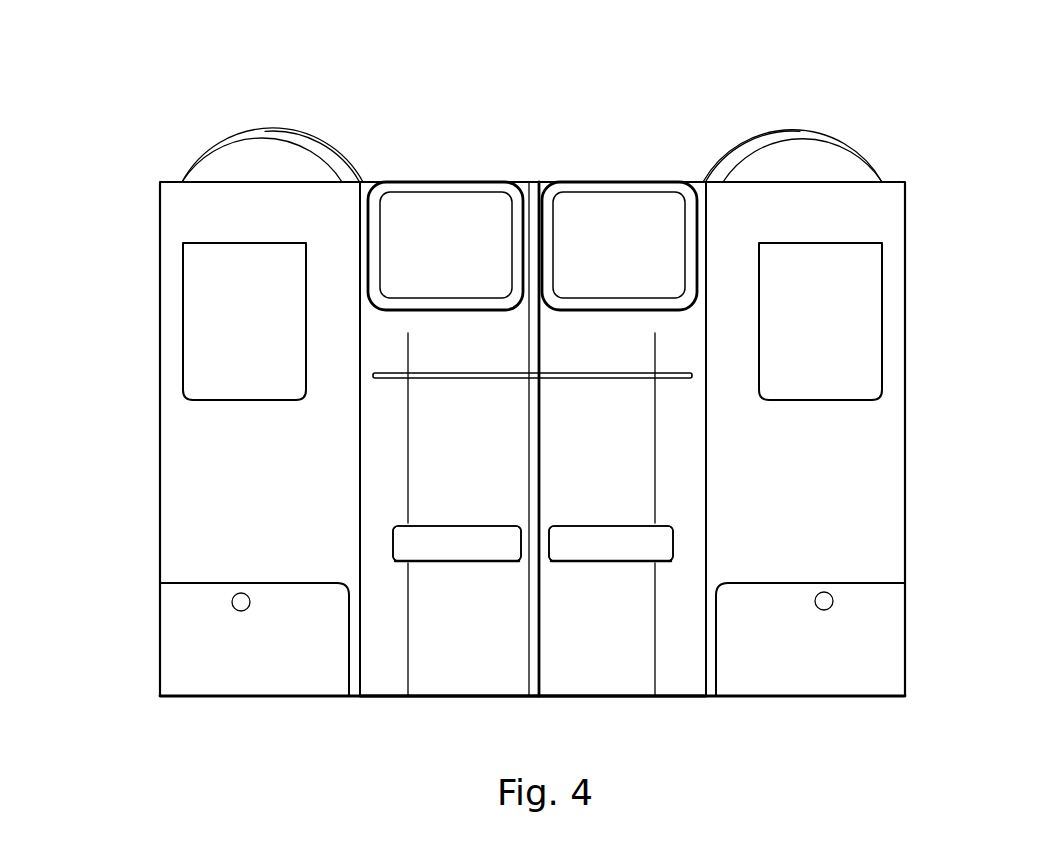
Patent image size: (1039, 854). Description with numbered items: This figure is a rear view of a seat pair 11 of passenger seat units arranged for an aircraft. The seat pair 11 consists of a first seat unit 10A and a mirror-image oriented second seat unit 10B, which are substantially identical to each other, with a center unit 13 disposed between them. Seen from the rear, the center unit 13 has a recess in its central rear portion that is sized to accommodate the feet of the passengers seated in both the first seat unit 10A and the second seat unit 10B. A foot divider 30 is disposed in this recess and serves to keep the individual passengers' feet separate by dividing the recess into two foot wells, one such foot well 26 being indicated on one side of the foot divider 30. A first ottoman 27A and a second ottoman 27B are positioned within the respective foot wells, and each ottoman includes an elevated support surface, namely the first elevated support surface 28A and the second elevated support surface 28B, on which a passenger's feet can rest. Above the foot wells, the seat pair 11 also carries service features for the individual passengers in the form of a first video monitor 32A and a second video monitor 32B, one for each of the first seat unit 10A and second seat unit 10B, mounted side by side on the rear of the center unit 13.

The first seat unit 10A is at (250, 90).
The second seat unit 10B is at (855, 103).
The seat pair 11 is at (560, 107).
The center unit 13 is at (597, 182).
The foot well 26 is at (489, 655).
The first ottoman 27A is at (410, 547).
The second ottoman 27B is at (648, 543).
The first elevated support surface 28A is at (458, 525).
The second elevated support surface 28B is at (593, 525).
The foot divider 30 is at (540, 606).
The first video monitor 32A is at (482, 182).
The second video monitor 32B is at (647, 182).